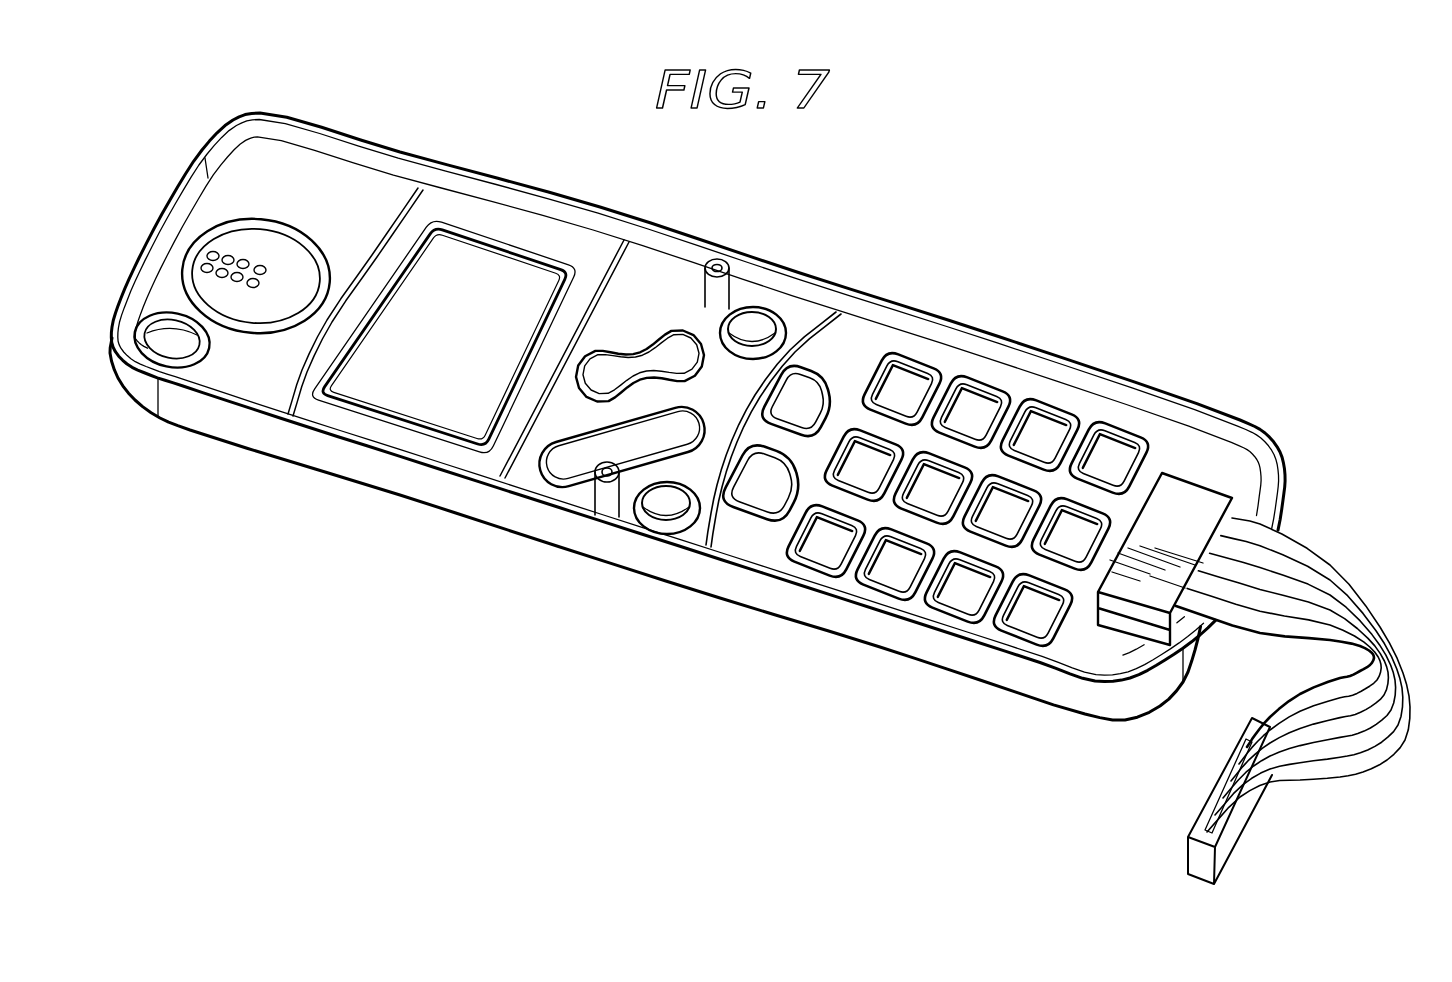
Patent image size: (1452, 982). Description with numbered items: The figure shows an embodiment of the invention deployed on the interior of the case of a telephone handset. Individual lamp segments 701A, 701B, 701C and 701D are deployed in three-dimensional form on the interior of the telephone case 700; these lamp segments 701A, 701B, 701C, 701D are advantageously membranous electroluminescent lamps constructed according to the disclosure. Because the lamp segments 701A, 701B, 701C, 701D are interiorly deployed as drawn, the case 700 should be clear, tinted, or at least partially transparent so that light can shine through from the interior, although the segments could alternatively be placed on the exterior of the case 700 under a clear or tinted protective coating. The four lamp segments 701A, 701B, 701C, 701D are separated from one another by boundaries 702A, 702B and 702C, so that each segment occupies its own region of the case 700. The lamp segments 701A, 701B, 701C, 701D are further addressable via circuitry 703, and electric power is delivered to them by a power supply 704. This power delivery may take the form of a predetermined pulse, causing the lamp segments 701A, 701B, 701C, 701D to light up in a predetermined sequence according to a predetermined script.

The telephone case 700 is at (237, 118).
The lamp segment 701A is at (257, 382).
The lamp segment 701B is at (517, 235).
The lamp segment 701C is at (520, 478).
The lamp segment 701D is at (760, 538).
The boundary 702A is at (397, 203).
The boundary 702B is at (640, 268).
The boundary 702C is at (815, 322).
The circuitry 703 is at (1297, 545).
The power supply 704 is at (1235, 835).